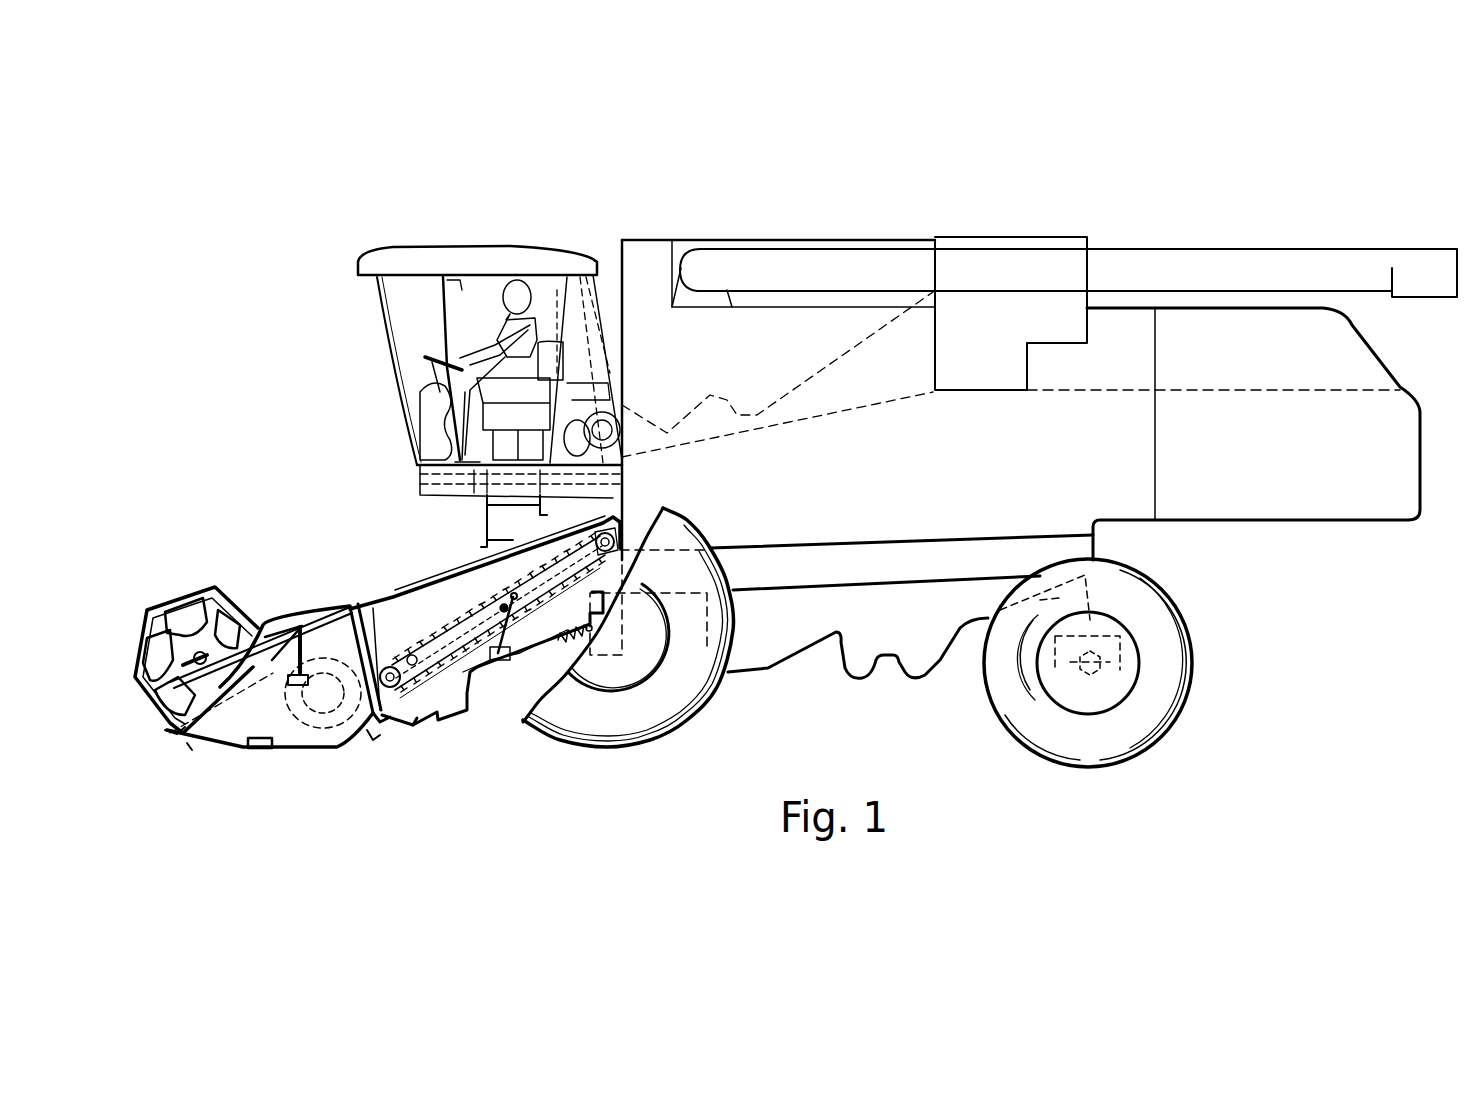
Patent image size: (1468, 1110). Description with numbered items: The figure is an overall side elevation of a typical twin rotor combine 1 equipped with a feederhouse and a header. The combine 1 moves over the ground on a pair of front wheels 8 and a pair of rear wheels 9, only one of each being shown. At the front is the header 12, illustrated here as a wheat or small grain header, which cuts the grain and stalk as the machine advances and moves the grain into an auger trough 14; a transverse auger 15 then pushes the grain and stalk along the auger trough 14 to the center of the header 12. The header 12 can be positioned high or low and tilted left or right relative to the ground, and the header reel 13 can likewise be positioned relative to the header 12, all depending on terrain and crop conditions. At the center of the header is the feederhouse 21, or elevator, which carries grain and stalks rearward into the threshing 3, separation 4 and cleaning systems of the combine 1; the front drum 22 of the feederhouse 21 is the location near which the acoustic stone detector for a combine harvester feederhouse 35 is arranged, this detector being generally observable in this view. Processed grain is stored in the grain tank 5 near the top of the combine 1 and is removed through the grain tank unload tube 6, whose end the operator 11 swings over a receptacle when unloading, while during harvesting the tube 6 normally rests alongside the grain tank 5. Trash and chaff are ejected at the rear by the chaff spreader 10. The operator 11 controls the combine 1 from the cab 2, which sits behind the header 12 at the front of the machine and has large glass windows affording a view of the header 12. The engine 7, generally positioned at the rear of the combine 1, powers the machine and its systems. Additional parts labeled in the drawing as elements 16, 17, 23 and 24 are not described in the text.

The combine 1 is at (285, 198).
The cab 2 is at (487, 248).
The threshing system 3 is at (725, 468).
The separation system 4 is at (820, 563).
The grain tank 5 is at (840, 335).
The grain tank unload tube 6 is at (1265, 267).
The engine 7 is at (1010, 316).
The front wheel 8 is at (697, 675).
The rear wheel 9 is at (1160, 675).
The chaff spreader 10 is at (1315, 520).
The operator 11 is at (497, 340).
The header 12 is at (258, 540).
The header reel 13 is at (190, 588).
The auger trough 14 is at (337, 743).
The transverse auger 15 is at (288, 727).
The header rear wall 16 is at (377, 720).
The skid shoe 17 is at (252, 743).
The feederhouse 21 is at (405, 545).
The front drum 22 is at (390, 667).
The conveyor chain 23 is at (493, 593).
The upper sprocket 24 is at (630, 514).
The acoustic stone detector for a combine harvester feederhouse 35 is at (458, 738).